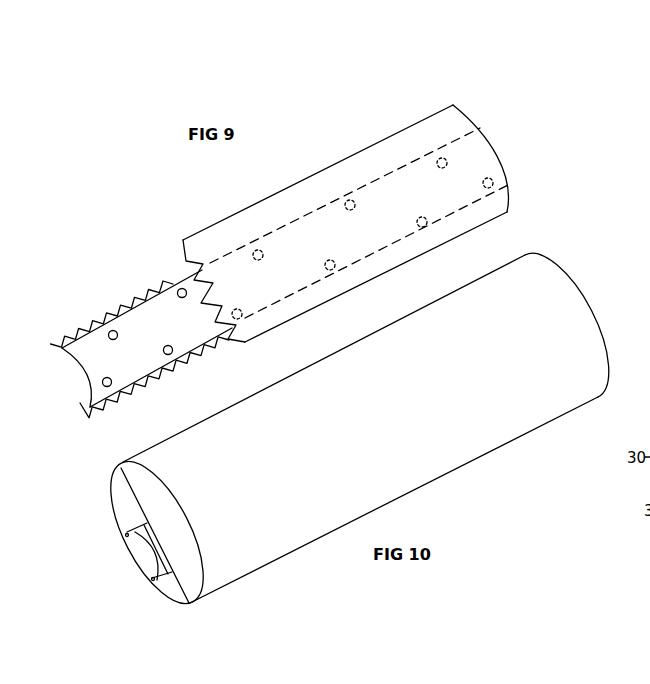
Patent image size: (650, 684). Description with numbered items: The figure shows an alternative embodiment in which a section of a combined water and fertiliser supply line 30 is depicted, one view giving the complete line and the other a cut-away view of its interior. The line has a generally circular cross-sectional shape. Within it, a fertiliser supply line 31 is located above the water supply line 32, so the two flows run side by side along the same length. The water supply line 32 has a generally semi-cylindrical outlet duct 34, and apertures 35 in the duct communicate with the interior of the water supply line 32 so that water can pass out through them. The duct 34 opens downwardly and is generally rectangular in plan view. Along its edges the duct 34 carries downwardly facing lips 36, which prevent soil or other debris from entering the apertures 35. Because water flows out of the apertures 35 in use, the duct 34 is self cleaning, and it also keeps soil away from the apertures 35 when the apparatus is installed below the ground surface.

In FIG. 9, the water and fertiliser supply line 30 is at (417, 139).
In FIG. 10, the water and fertiliser supply line 30 is at (422, 445).
In FIG. 10, the fertiliser supply line 31 is at (192, 562).
In FIG. 10, the water supply line 32 is at (125, 513).
In FIG. 9, the outlet duct 34 is at (88, 363).
In FIG. 10, the outlet duct 34 is at (140, 552).
In FIG. 9, the apertures 35 is at (179, 291).
In FIG. 9, the downwardly facing lips 36 is at (82, 330).
In FIG. 10, the downwardly facing lips 36 is at (127, 537).